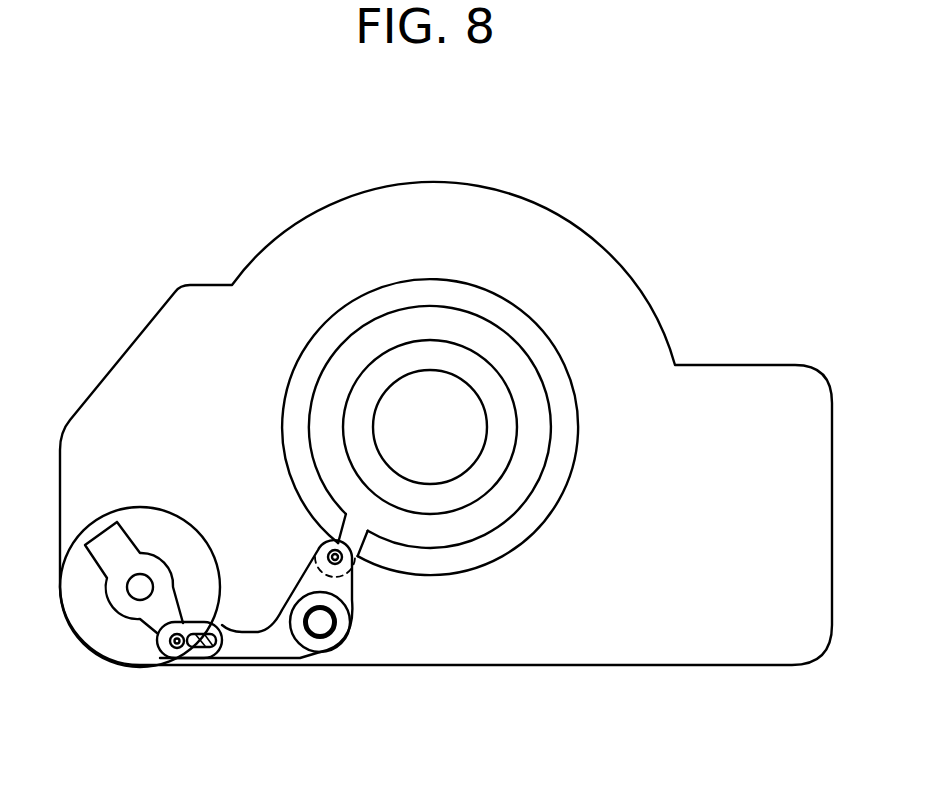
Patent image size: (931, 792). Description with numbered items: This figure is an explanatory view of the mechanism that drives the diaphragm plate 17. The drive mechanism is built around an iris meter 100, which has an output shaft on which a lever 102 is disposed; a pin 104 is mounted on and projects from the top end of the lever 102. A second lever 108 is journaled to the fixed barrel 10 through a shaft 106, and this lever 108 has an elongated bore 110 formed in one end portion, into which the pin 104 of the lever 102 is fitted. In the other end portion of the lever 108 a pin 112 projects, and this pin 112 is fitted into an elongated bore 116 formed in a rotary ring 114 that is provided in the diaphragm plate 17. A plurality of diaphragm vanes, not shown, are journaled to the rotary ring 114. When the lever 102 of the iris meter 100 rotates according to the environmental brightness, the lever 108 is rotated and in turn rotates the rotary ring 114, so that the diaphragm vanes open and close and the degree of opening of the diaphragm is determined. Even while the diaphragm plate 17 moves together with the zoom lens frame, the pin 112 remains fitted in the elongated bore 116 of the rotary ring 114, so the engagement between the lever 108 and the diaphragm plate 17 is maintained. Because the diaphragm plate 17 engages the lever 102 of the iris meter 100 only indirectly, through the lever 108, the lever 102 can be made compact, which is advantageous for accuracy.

The fixed barrel 10 is at (590, 242).
The diaphragm plate 17 is at (560, 372).
The rotary ring 114 is at (525, 470).
The elongated bore 116 is at (358, 562).
The pin 112 is at (318, 549).
The iris meter 100 is at (148, 506).
The lever 102 is at (172, 565).
The pin 104 is at (172, 655).
The shaft 106 is at (322, 622).
The lever 108 is at (272, 650).
The elongated bore 110 is at (210, 646).